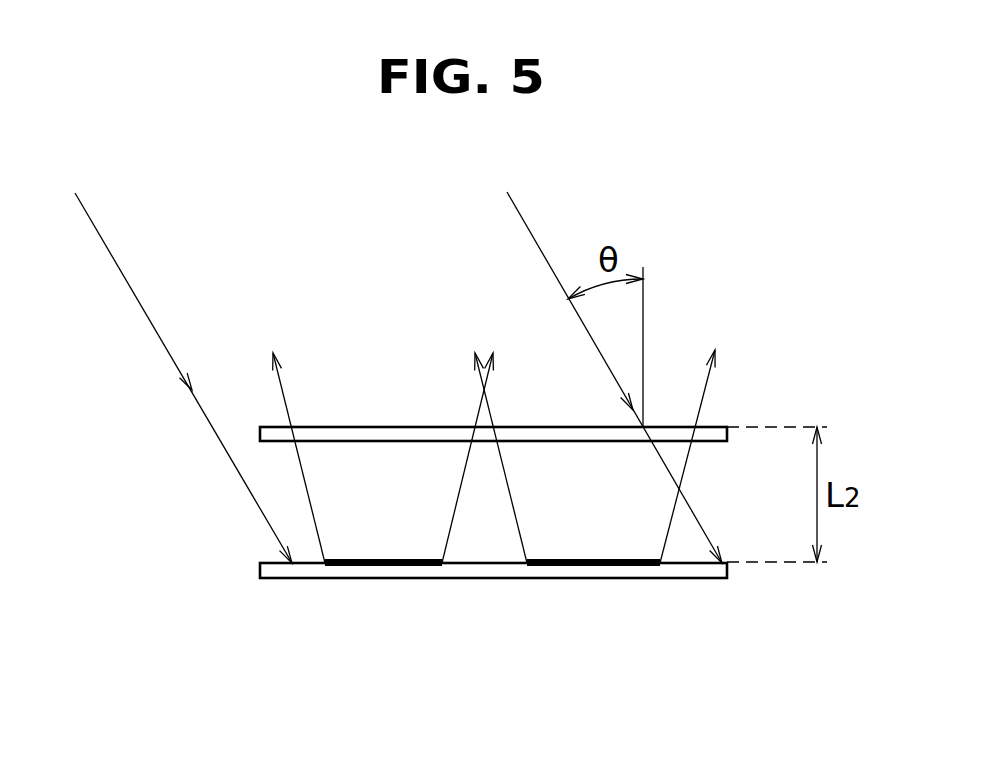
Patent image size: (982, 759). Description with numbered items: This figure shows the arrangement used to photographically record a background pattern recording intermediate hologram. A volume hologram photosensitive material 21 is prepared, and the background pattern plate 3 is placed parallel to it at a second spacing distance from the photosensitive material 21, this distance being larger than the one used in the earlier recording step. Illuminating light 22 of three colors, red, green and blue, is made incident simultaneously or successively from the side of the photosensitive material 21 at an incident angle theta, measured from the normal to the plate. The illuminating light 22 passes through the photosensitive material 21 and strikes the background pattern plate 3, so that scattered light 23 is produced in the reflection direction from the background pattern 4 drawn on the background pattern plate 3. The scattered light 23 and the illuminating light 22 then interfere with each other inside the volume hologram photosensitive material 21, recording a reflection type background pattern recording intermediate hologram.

The background pattern plate 3 is at (695, 572).
The background pattern 4 is at (382, 565).
The volume hologram photosensitive material 21 is at (717, 422).
The illuminating light 22 is at (528, 228).
The scattered light 23 is at (285, 400).